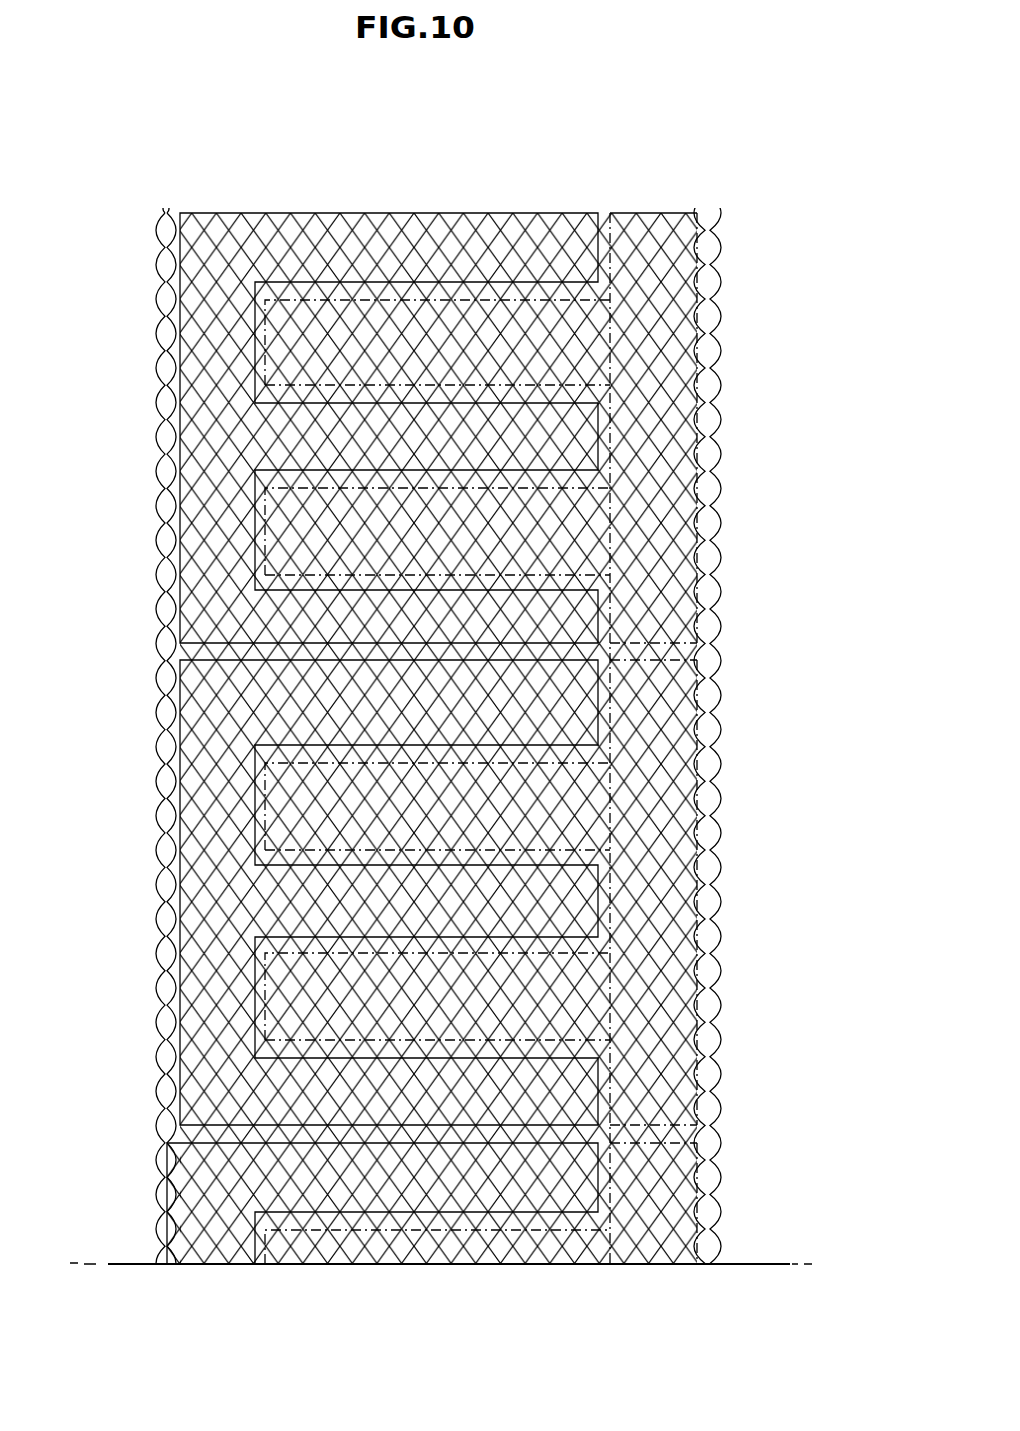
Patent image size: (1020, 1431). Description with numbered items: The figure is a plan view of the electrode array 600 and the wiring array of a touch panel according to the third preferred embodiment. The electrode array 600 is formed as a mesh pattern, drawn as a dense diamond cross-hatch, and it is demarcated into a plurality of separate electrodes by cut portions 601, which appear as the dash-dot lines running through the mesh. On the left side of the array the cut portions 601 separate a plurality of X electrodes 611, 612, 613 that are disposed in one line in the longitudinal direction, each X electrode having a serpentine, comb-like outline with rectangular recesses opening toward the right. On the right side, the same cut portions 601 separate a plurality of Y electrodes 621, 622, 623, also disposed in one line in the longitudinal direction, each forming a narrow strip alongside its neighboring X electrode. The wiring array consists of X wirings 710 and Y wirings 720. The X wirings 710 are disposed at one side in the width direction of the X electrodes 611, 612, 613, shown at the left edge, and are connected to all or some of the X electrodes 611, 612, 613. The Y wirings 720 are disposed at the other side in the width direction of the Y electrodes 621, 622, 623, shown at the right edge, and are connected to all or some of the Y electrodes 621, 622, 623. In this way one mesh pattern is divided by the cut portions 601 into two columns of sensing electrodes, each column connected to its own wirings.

The electrode array 600 is at (669, 177).
The cut portions 601 is at (607, 242).
The X electrode 611 is at (178, 362).
The X electrode 612 is at (178, 810).
The X electrode 613 is at (166, 1202).
The Y electrode 621 is at (699, 280).
The Y electrode 622 is at (708, 785).
The Y electrode 623 is at (708, 1203).
The X wirings 710 is at (302, 743).
The Y wirings 720 is at (722, 747).